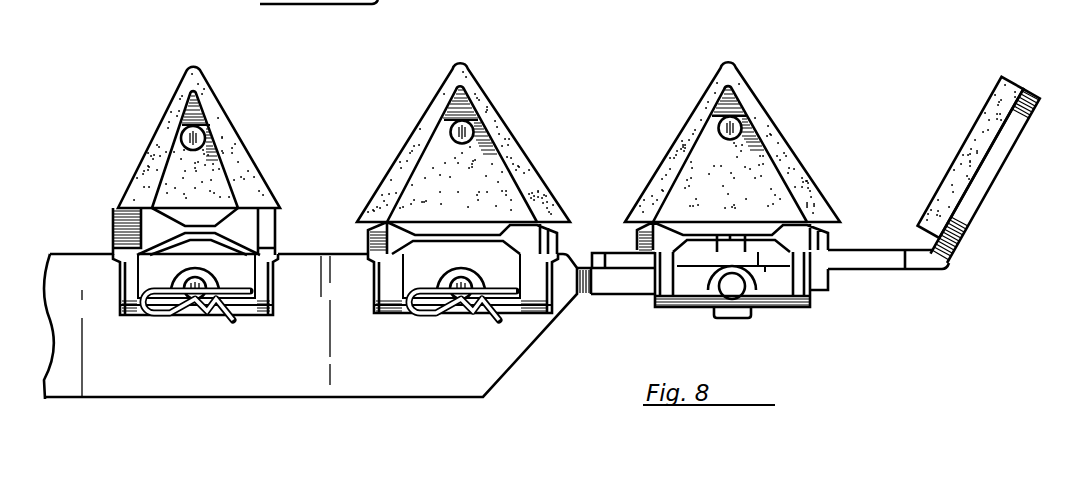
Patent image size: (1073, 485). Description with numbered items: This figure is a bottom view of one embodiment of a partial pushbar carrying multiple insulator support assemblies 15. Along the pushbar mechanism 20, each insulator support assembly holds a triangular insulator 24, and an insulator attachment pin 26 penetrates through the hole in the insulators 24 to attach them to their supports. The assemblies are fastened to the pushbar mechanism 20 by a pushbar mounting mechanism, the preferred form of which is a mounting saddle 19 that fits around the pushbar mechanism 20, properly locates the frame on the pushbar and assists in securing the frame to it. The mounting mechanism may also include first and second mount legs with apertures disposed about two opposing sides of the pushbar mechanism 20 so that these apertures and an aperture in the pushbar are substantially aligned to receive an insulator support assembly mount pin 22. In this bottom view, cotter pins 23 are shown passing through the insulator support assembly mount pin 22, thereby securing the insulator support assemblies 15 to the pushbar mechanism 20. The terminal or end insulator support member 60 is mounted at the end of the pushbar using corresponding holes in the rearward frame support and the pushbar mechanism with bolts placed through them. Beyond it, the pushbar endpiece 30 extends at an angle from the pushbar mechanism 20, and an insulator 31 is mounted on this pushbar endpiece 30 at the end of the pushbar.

The insulator support assemblies 15 is at (601, 133).
The mounting saddle 19 is at (660, 308).
The pushbar mechanism 20 is at (322, 382).
The insulator support assembly mount pin 22 is at (197, 316).
The cotter pins 23 is at (160, 322).
The insulators 24 is at (145, 150).
The insulator attachment pin 26 is at (450, 130).
The pushbar endpiece 30 is at (993, 185).
The insulator 31 is at (960, 143).
The terminal or end insulator support member 60 is at (772, 62).